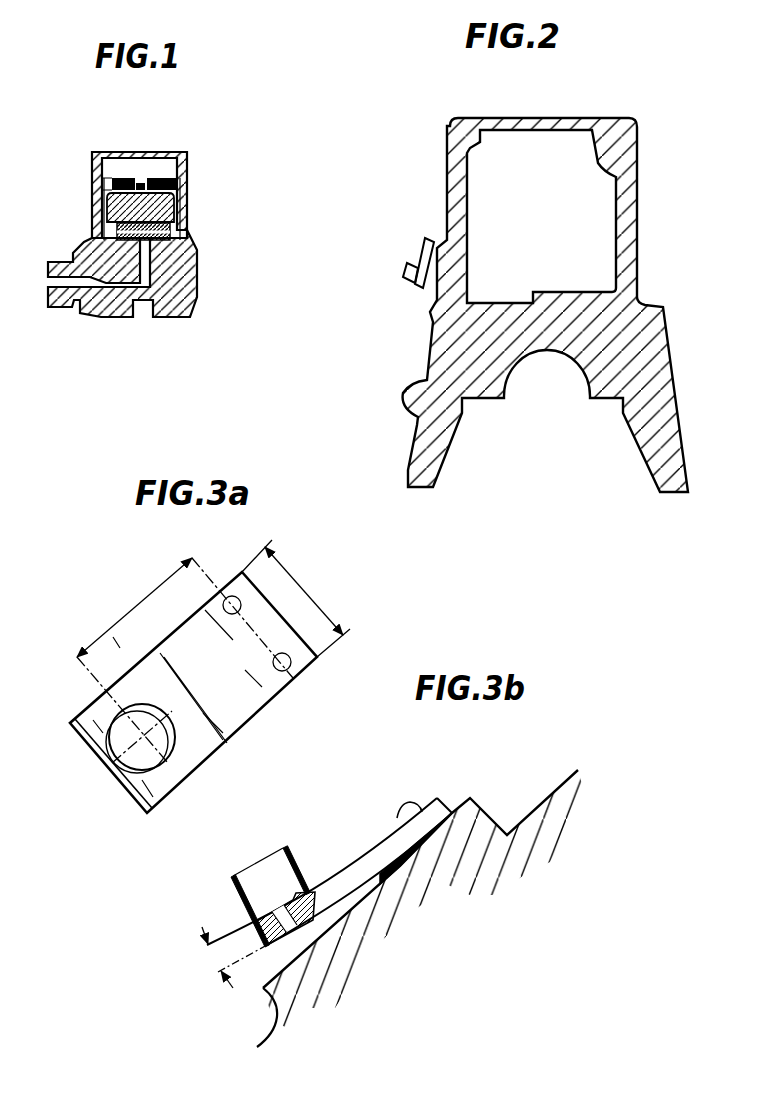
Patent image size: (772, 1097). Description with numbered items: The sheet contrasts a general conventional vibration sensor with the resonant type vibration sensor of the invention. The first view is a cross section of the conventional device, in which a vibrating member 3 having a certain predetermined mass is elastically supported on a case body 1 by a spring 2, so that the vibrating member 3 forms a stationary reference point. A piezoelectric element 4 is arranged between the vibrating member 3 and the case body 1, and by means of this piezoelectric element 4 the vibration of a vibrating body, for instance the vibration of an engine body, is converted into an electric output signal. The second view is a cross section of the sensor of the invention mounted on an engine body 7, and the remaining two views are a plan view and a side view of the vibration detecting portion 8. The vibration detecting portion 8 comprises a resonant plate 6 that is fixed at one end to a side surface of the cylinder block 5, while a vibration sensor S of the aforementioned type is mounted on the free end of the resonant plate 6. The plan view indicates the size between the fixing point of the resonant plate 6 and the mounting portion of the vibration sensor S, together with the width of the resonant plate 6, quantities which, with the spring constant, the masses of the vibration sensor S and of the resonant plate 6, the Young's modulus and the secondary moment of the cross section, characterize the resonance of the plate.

In FIG. 1, the case body 1 is at (187, 277).
In FIG. 1, the spring 2 is at (186, 153).
In FIG. 1, the vibrating member 3 is at (168, 210).
In FIG. 1, the piezoelectric element 4 is at (162, 245).
In FIG. 1, the vibration sensor S is at (85, 215).
In FIG. 2, the vibration sensor S is at (403, 265).
In FIG. 3b, the vibration sensor S is at (304, 836).
In FIG. 2, the cylinder block 5 is at (650, 317).
In FIG. 3b, the cylinder block 5 is at (522, 838).
In FIG. 2, the resonant plate 6 is at (430, 239).
In FIG. 3a, the resonant plate 6 is at (210, 676).
In FIG. 3b, the resonant plate 6 is at (372, 860).
In FIG. 2, the engine body 7 is at (642, 173).
In FIG. 2, the vibration detecting portion 8 is at (415, 292).
In FIG. 3b, the vibration detecting portion 8 is at (262, 957).